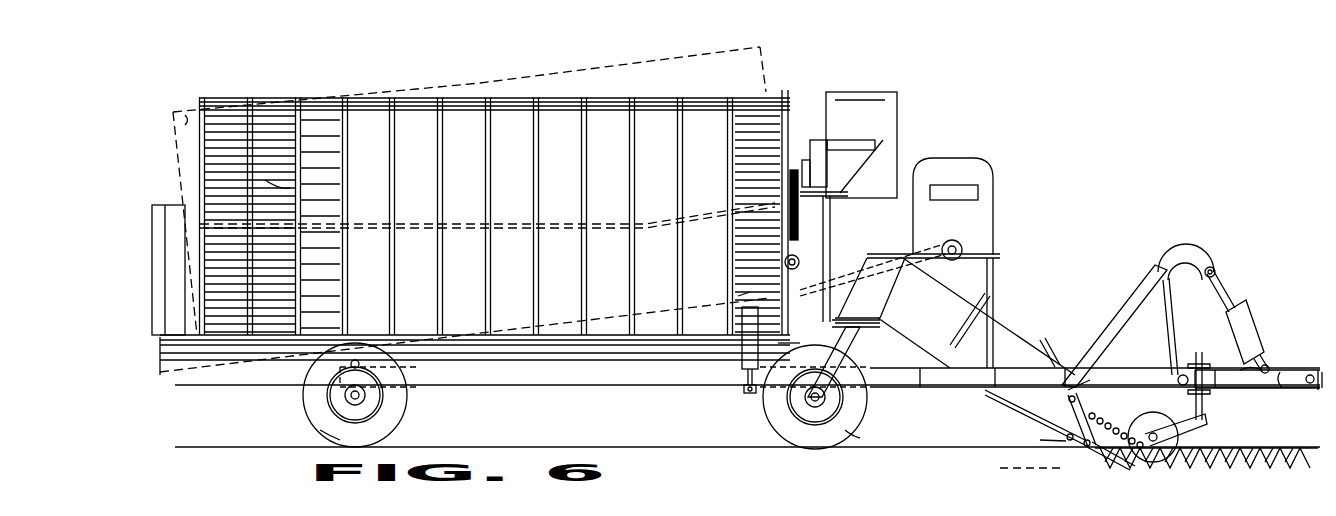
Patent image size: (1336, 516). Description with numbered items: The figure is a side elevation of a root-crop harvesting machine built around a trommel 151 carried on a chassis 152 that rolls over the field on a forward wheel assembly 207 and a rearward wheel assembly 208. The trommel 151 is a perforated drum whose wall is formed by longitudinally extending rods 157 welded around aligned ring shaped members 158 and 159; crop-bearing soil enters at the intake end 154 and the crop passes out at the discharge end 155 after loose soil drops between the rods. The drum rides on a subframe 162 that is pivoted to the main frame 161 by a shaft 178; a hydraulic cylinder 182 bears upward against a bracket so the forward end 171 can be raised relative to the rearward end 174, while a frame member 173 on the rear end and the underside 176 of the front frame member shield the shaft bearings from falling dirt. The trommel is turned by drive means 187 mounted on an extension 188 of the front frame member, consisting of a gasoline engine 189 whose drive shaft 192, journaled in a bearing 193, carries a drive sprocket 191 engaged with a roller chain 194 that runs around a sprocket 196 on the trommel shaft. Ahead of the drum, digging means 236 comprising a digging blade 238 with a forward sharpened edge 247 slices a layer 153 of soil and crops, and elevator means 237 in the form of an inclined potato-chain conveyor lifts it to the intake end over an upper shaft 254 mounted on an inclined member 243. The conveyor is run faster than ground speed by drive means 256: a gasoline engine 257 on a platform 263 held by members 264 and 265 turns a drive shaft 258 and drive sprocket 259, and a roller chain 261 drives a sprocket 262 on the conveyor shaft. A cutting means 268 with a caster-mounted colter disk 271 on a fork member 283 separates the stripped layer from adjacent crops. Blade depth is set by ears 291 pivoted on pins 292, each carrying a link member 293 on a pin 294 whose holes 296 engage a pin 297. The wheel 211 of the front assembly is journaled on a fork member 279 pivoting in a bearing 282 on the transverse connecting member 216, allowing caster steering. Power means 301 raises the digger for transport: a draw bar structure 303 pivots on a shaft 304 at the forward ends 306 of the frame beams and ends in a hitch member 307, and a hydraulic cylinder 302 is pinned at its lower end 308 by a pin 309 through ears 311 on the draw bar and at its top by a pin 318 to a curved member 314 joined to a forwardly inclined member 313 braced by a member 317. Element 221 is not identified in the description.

The trommel 151 is at (773, 78).
The chassis 152 is at (232, 411).
The layer of crop bearing soil 153 is at (1097, 455).
The intake end 154 is at (788, 112).
The discharge end 155 is at (186, 118).
The longitudinally extending rods 157 is at (270, 185).
The ring shaped member 158 is at (298, 98).
The ring shaped member 159 is at (441, 98).
The main frame 161 is at (583, 392).
The subframe 162 is at (658, 360).
The forward end of subframe 171 is at (792, 345).
The frame member 173 is at (169, 270).
The rearward end of subframe 174 is at (165, 375).
The underside of frame member 176 is at (831, 210).
The shaft 178 is at (340, 366).
The hydraulic cylinder 182 is at (742, 347).
The drive means 187 is at (902, 139).
The extension of frame member 188 is at (862, 182).
The gasoline engine 189 is at (890, 118).
The drive sprocket 191 is at (790, 178).
The drive shaft 192 is at (858, 150).
The bearing 193 is at (806, 158).
The roller chain 194 is at (790, 195).
The sprocket 196 is at (800, 258).
The forward wheel assembly 207 is at (872, 409).
The rearward wheel assembly 208 is at (412, 410).
The wheel 211 is at (855, 432).
The connecting member 216 is at (868, 358).
The tire 221 is at (322, 422).
The digging means 236 is at (1185, 466).
The elevator means 237 is at (1018, 318).
The digging blade 238 is at (1084, 449).
The inclined member 243 is at (1000, 397).
The sharpened edge 247 is at (1122, 466).
The upper shaft 254 is at (735, 290).
The drive means 256 is at (1006, 211).
The gasoline engine 257 is at (990, 190).
The drive shaft 258 is at (965, 245).
The drive sprocket 259 is at (948, 238).
The roller chain 261 is at (900, 246).
The sprocket 262 is at (870, 290).
The platform 263 is at (1000, 256).
The member 264 is at (993, 281).
The member 265 is at (900, 282).
The cutting means 268 is at (1222, 420).
The colter disk 271 is at (1153, 437).
The fork member 279 is at (1095, 378).
The bearing 282 is at (893, 320).
The fork member 283 is at (1205, 430).
The ear 291 is at (1040, 440).
The pin 292 is at (1066, 437).
The link member 293 is at (1095, 412).
The pin 294 is at (1135, 425).
The holes 296 is at (1090, 386).
The pin 297 is at (1063, 392).
The power means 301 is at (1266, 329).
The hydraulic cylinder 302 is at (1246, 322).
The draw bar structure 303 is at (1228, 383).
The shaft 304 is at (1185, 366).
The forward ends of frame beams 306 is at (1172, 372).
The hitch member 307 is at (1316, 368).
The lower end of hydraulic cylinder 308 is at (1272, 360).
The pin 309 is at (1250, 368).
The ears 311 is at (1280, 388).
The forwardly inclined member 313 is at (1120, 315).
The curved member 314 is at (1190, 252).
The brace member 317 is at (1172, 305).
The pin 318 is at (1216, 270).